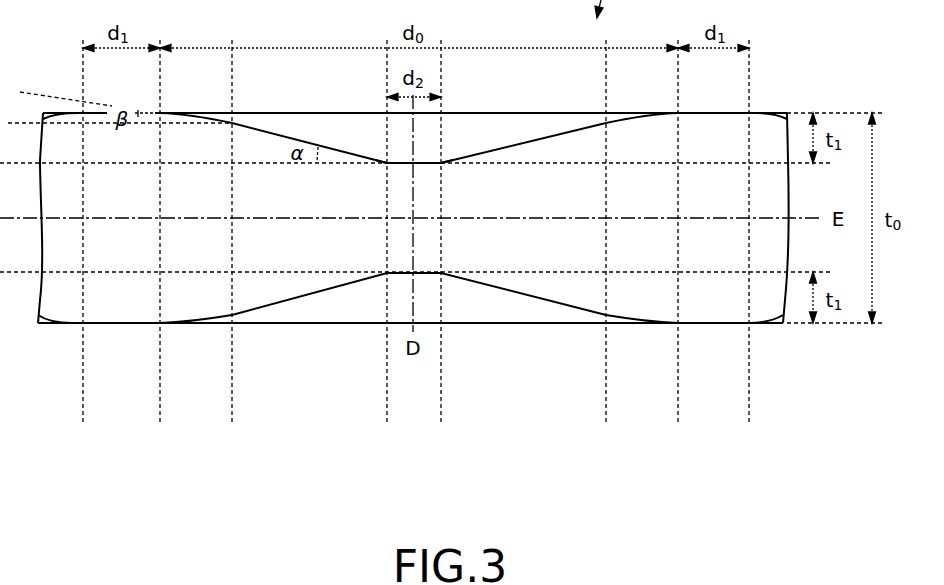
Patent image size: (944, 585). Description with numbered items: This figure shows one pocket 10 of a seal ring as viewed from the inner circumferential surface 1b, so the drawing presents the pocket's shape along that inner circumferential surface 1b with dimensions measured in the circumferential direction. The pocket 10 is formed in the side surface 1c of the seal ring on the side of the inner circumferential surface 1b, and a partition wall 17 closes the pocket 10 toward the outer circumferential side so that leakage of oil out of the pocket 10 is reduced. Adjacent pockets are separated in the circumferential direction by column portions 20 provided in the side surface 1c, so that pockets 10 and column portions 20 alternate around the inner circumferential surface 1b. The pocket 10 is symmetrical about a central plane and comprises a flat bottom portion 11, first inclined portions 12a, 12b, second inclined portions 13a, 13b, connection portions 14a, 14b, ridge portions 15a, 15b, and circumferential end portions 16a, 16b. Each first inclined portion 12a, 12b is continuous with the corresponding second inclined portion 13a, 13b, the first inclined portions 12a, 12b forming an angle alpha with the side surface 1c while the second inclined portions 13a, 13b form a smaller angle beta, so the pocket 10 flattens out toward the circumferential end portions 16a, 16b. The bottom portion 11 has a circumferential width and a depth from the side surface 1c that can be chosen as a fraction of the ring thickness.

The inner circumferential surface 1b is at (497, 261).
The side surface 1c is at (717, 112).
The pocket 10 is at (678, 425).
The bottom portion 11 is at (441, 358).
The first inclined portion 12a is at (232, 358).
The first inclined portion 12b is at (441, 358).
The second inclined portion 13a is at (160, 358).
The second inclined portion 13b is at (606, 358).
The connection portion 14a is at (387, 160).
The connection portion 14b is at (441, 160).
The ridge portion 15a is at (234, 122).
The ridge portion 15b is at (605, 121).
The circumferential end portion 16a is at (161, 112).
The circumferential end portion 16b is at (677, 112).
The partition wall 17 is at (516, 142).
The column portion 20 is at (160, 425).